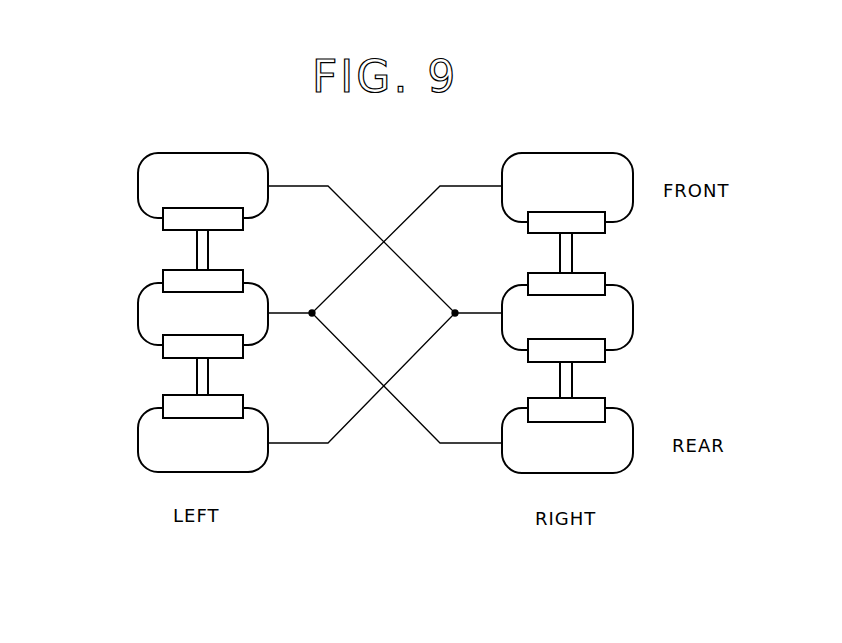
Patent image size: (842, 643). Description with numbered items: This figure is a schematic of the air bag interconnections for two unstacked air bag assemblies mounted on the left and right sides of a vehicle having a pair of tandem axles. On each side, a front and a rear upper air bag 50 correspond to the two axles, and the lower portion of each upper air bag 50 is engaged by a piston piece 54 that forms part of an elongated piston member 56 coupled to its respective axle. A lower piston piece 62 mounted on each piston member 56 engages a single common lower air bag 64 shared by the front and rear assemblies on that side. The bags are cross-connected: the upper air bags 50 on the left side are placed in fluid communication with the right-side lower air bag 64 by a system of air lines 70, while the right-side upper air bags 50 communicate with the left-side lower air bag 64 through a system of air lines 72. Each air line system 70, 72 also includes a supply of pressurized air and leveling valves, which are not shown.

The upper air bag 50 is at (150, 173).
The piston piece 54 is at (170, 220).
The piston member 56 is at (208, 253).
The lower piston piece 62 is at (167, 277).
The lower air bag 64 is at (146, 310).
The system of air lines 70 is at (296, 312).
The system of air lines 72 is at (472, 312).